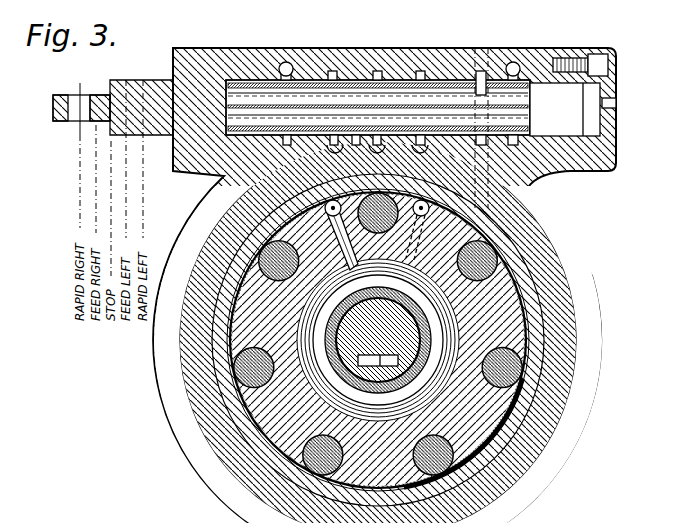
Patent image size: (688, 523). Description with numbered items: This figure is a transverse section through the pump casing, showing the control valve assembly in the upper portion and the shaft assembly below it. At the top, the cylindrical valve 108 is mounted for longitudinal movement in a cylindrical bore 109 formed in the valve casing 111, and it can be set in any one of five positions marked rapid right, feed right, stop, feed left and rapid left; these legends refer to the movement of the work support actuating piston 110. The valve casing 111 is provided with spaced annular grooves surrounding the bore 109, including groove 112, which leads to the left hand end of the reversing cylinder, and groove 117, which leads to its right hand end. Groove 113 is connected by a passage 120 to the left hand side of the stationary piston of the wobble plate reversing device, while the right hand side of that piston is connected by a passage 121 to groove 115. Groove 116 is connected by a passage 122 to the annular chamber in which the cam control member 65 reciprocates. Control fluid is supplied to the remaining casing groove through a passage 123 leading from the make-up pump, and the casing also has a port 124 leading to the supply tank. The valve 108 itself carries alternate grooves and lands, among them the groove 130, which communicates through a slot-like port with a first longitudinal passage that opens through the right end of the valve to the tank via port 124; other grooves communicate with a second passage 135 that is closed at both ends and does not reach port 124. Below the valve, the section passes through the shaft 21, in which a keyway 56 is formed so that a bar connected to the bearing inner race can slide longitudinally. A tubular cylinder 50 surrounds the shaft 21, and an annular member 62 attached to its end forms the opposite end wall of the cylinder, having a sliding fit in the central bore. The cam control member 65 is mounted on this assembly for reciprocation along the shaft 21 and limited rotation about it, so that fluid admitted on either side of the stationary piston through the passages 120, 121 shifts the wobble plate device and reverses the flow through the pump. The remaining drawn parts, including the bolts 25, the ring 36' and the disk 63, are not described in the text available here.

The cylindrical valve 108 is at (197, 72).
The cylindrical bore 109 is at (540, 115).
The work support actuating piston 110 is at (369, 63).
The valve casing 111 is at (381, 40).
The annular groove 112 is at (278, 54).
The annular groove 113 is at (323, 63).
The annular groove 115 is at (413, 63).
The annular groove 116 is at (473, 63).
The annular groove 117 is at (505, 60).
The passage 120 is at (378, 338).
The passage 121 is at (395, 256).
The passage 122 is at (488, 182).
The passage 123 is at (348, 133).
The port 124 is at (608, 96).
The groove 130 is at (522, 89).
The second passage 135 is at (522, 104).
The shaft 21 is at (391, 360).
The bolts 25 is at (482, 245).
The housing ring 36' is at (353, 332).
The tubular cylinder 50 is at (336, 372).
The keyway 56 is at (378, 378).
The annular member 62 is at (435, 373).
The gear disk 63 is at (492, 288).
The cam control member 65 is at (591, 338).